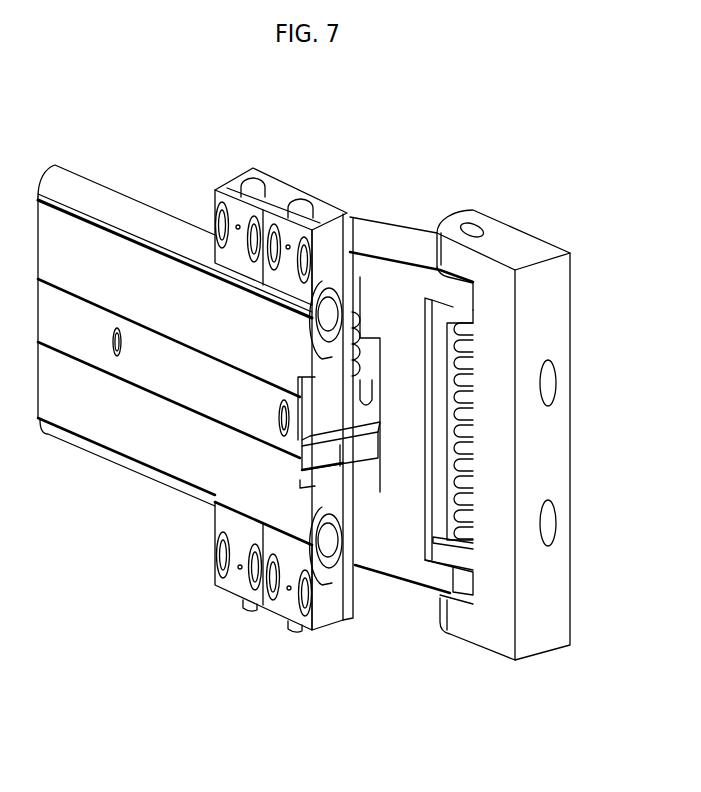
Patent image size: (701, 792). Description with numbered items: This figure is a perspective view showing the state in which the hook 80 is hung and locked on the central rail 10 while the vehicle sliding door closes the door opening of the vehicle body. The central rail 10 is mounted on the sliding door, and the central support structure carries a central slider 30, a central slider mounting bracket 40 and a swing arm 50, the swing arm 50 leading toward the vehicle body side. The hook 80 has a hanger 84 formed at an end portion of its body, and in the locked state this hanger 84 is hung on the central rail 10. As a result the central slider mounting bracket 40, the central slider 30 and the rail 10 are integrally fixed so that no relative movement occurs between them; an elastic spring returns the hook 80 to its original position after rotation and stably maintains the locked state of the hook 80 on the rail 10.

The central rail 10 is at (172, 450).
The central slider 30 is at (287, 603).
The central slider mounting bracket 40 is at (347, 607).
The swing arm 50 is at (405, 570).
The hook 80 is at (328, 481).
The hanger 84 is at (357, 377).